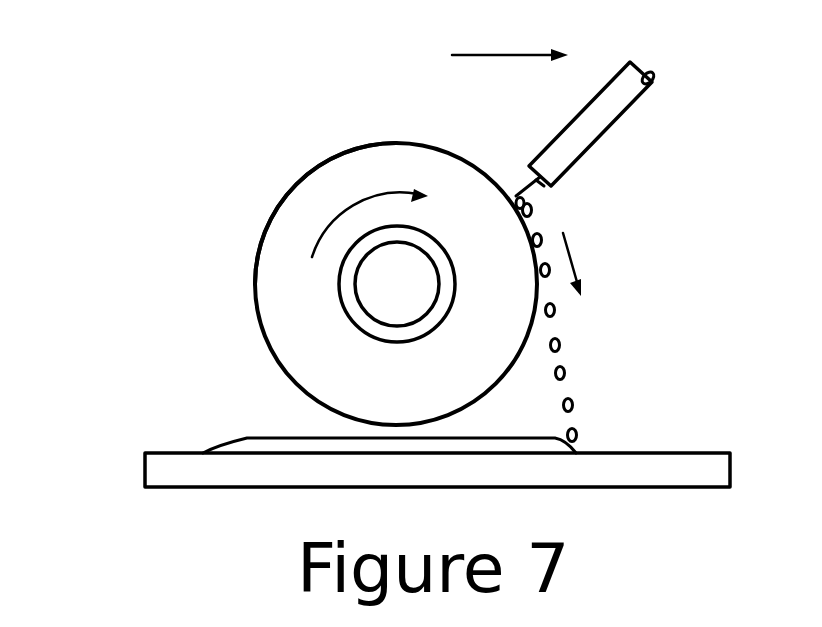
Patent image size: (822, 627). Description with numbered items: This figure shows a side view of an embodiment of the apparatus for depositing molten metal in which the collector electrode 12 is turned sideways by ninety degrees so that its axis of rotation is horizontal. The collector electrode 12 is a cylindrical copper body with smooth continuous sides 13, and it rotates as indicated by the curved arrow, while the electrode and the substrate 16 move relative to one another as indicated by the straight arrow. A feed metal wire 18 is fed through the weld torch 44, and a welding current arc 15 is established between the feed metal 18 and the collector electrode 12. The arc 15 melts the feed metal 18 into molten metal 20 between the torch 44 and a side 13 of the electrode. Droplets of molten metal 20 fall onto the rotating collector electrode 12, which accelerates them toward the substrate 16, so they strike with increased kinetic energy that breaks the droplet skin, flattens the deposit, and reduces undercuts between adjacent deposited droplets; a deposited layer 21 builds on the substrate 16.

The collector electrode 12 is at (268, 262).
The smooth continuous sides 13 is at (298, 184).
The welding current arc 15 is at (517, 198).
The substrate 16 is at (157, 468).
The feed metal wire 18 is at (543, 187).
The molten metal 20 is at (560, 345).
The coating film 21 is at (243, 440).
The weld torch 44 is at (608, 118).